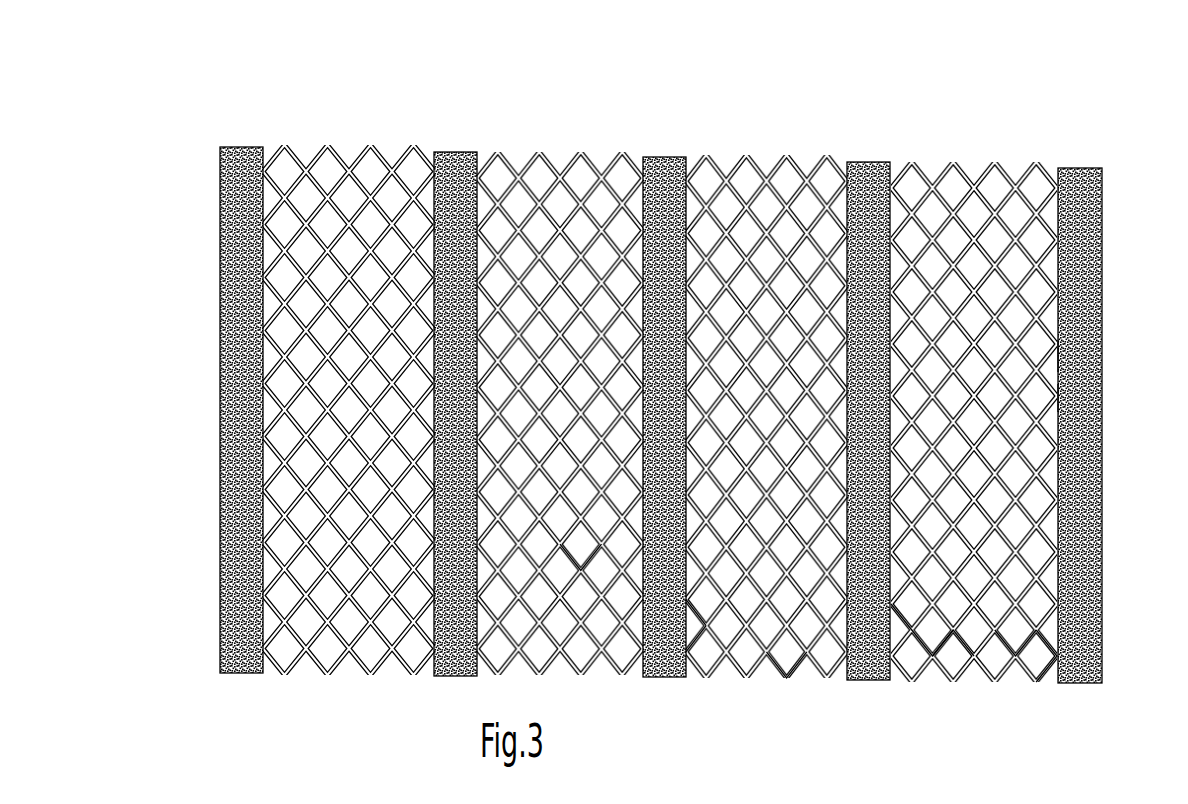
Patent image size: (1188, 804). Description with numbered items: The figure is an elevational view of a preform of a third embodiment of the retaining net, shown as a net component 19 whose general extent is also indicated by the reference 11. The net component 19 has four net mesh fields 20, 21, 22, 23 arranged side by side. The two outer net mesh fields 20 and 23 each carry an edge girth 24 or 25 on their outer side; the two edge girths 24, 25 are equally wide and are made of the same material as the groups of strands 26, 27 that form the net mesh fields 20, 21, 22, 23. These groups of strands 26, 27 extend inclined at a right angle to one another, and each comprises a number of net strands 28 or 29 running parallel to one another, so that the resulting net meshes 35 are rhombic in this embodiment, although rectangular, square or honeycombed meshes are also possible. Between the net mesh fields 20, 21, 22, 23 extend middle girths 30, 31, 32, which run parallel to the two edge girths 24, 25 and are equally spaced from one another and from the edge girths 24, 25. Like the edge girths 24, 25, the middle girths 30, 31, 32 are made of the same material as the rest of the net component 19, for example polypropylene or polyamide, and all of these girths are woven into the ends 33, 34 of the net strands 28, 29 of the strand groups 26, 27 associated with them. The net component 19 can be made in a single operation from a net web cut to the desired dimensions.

The stent wall 11 is at (1047, 650).
The net component 19 is at (748, 140).
The net mesh field 20 is at (349, 157).
The net mesh field 21 is at (560, 163).
The net mesh field 22 is at (765, 167).
The net mesh field 23 is at (973, 172).
The edge girth 24 is at (223, 412).
The edge girth 25 is at (1092, 412).
The group of strands 26 is at (948, 642).
The group of strands 27 is at (1002, 647).
The net strand 28 is at (903, 633).
The net strand 29 is at (780, 668).
The middle girth 30 is at (455, 657).
The middle girth 31 is at (668, 647).
The middle girth 32 is at (868, 633).
The end of net strand 33 is at (703, 637).
The end of net strand 34 is at (697, 635).
The net mesh 35 is at (598, 570).